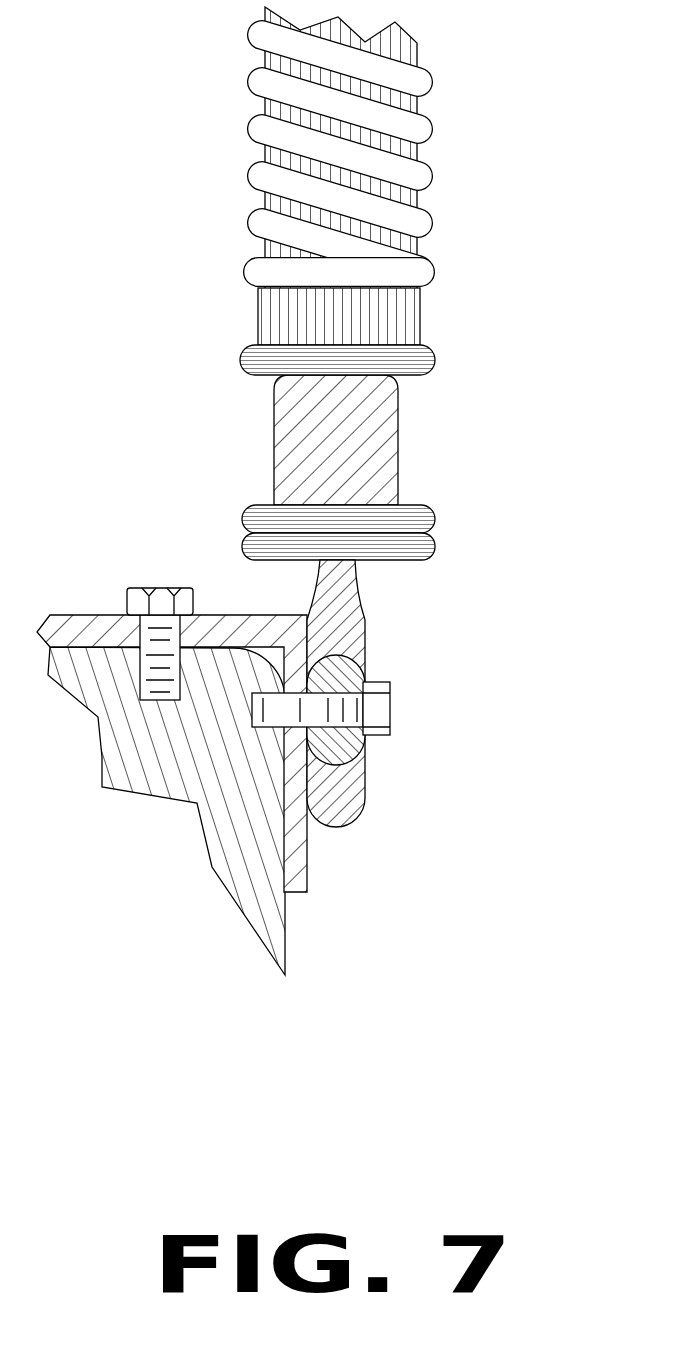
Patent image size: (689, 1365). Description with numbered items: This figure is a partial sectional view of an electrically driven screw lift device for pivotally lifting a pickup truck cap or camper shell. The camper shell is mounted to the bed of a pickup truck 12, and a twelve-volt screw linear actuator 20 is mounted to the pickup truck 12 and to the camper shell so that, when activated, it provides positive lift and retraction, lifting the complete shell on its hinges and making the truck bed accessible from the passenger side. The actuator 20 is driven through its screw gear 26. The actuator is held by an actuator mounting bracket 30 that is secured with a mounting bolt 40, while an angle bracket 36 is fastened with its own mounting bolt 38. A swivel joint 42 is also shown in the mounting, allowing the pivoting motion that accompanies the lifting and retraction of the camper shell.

The pickup truck 12 is at (155, 757).
The screw linear actuator 20 is at (420, 312).
The screw gear 26 is at (420, 153).
The actuator mounting bracket 30 is at (365, 632).
The angle bracket 36 is at (107, 614).
The mounting bolt 38 is at (168, 588).
The mounting bolt 40 is at (390, 703).
The swivel joint 42 is at (365, 795).